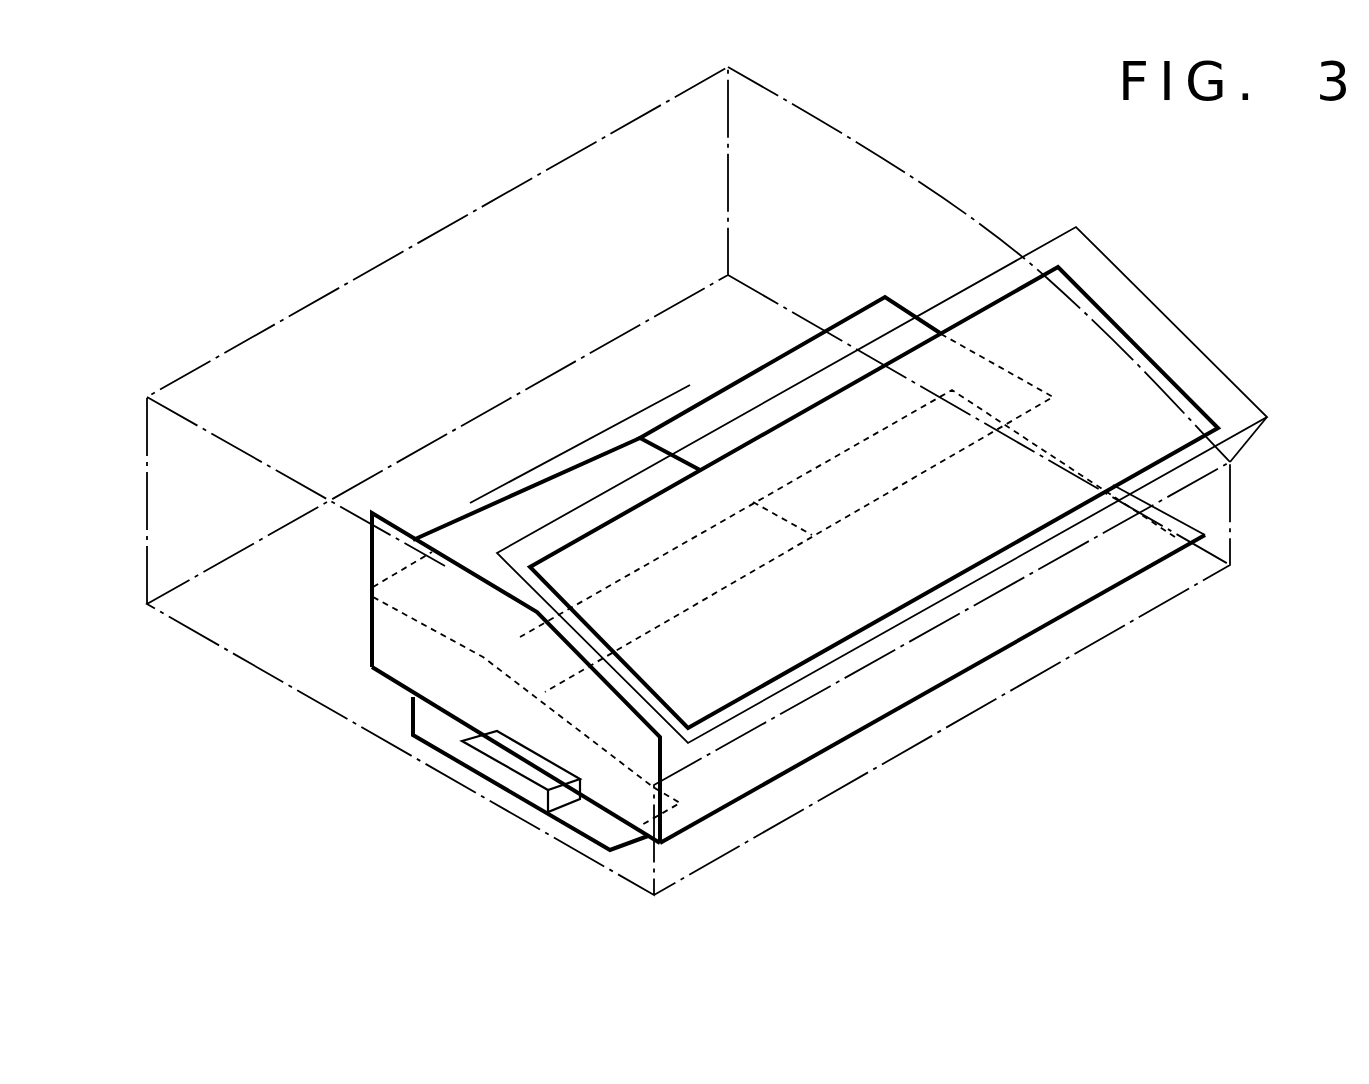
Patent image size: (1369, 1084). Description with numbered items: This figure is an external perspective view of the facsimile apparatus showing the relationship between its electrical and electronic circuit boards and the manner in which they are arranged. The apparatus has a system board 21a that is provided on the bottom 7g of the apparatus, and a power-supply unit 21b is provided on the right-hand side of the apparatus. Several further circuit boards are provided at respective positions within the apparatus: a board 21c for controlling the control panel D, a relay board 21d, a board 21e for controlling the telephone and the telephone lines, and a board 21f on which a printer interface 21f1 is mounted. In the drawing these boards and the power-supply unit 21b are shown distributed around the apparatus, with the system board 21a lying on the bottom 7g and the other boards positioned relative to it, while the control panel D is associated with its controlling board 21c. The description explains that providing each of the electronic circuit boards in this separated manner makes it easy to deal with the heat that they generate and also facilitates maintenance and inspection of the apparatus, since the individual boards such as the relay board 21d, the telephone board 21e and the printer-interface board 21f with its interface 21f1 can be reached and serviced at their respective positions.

The bottom 7g is at (873, 776).
The control panel D is at (1214, 368).
The system board 21a is at (1085, 585).
The power-supply unit 21b is at (907, 330).
The board for controlling the control panel 21c is at (1110, 350).
The relay board 21d is at (482, 518).
The board for controlling the telephone and telephone lines 21e is at (398, 663).
The board mounting a printer interface 21f is at (605, 838).
The printer interface 21f1 is at (512, 778).